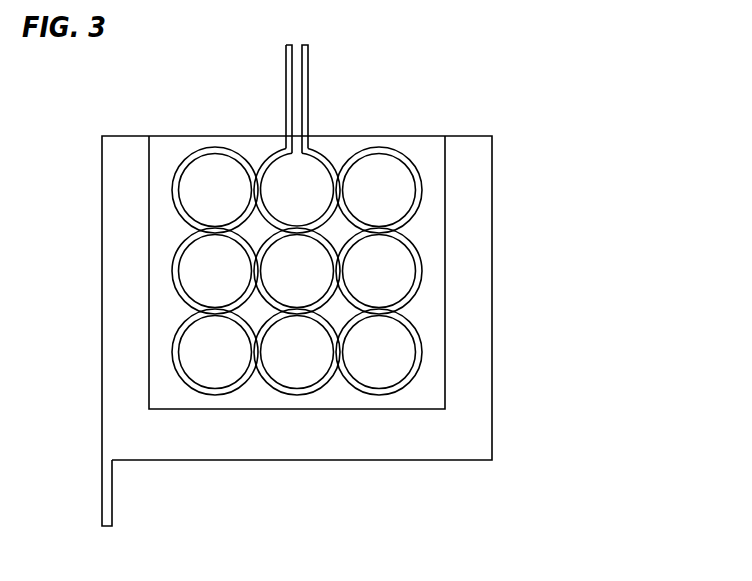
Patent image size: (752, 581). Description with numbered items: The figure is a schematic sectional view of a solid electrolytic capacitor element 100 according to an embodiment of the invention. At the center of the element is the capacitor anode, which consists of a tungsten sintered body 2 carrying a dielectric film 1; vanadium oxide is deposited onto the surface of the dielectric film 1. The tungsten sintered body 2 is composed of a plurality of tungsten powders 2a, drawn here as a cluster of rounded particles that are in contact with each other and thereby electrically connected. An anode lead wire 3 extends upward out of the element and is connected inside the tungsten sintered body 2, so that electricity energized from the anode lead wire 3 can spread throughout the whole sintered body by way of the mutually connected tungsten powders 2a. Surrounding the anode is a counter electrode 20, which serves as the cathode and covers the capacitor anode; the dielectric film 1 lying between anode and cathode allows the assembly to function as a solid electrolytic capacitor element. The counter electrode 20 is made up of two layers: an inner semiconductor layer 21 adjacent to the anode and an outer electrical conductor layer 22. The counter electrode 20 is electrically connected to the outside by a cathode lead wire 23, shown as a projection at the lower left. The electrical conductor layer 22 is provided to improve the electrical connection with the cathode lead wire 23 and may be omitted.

The solid electrolytic capacitor element 100 is at (575, 77).
The dielectric film 1 is at (196, 151).
The tungsten sintered body 2 is at (563, 198).
The tungsten powders 2a is at (392, 198).
The anode lead wire 3 is at (297, 78).
The counter electrode 20 is at (510, 73).
The semiconductor layer 21 is at (425, 148).
The electrical conductor layer 22 is at (470, 148).
The cathode lead wire 23 is at (106, 505).